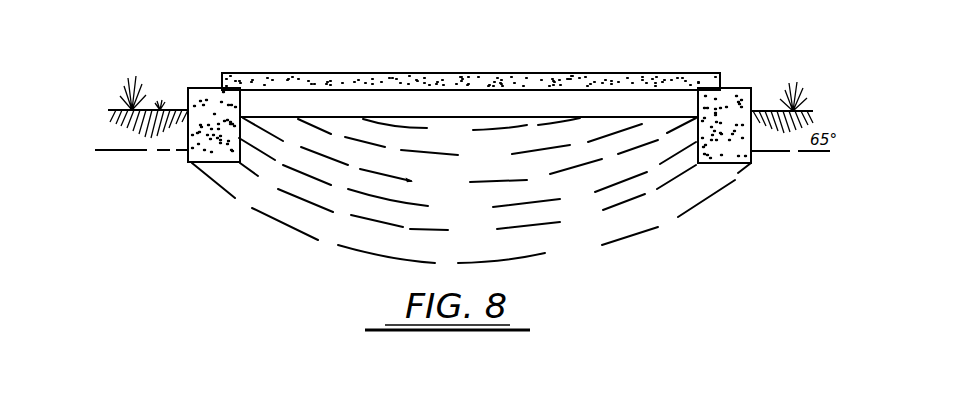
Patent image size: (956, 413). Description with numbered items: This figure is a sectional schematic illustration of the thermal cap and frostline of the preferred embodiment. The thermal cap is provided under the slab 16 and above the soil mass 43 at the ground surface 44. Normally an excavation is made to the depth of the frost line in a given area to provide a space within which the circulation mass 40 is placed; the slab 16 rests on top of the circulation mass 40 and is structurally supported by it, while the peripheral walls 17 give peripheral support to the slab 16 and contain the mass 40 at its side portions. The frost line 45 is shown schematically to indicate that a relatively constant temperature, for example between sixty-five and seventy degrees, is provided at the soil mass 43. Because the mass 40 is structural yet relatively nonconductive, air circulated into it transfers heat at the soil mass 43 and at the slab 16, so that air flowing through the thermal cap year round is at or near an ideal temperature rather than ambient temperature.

The slab 16 is at (370, 83).
The peripheral walls 17 is at (191, 137).
The circulation mass 40 is at (550, 107).
The soil mass 43 is at (312, 271).
The ground surface 44 is at (757, 110).
The frost line 45 is at (130, 151).